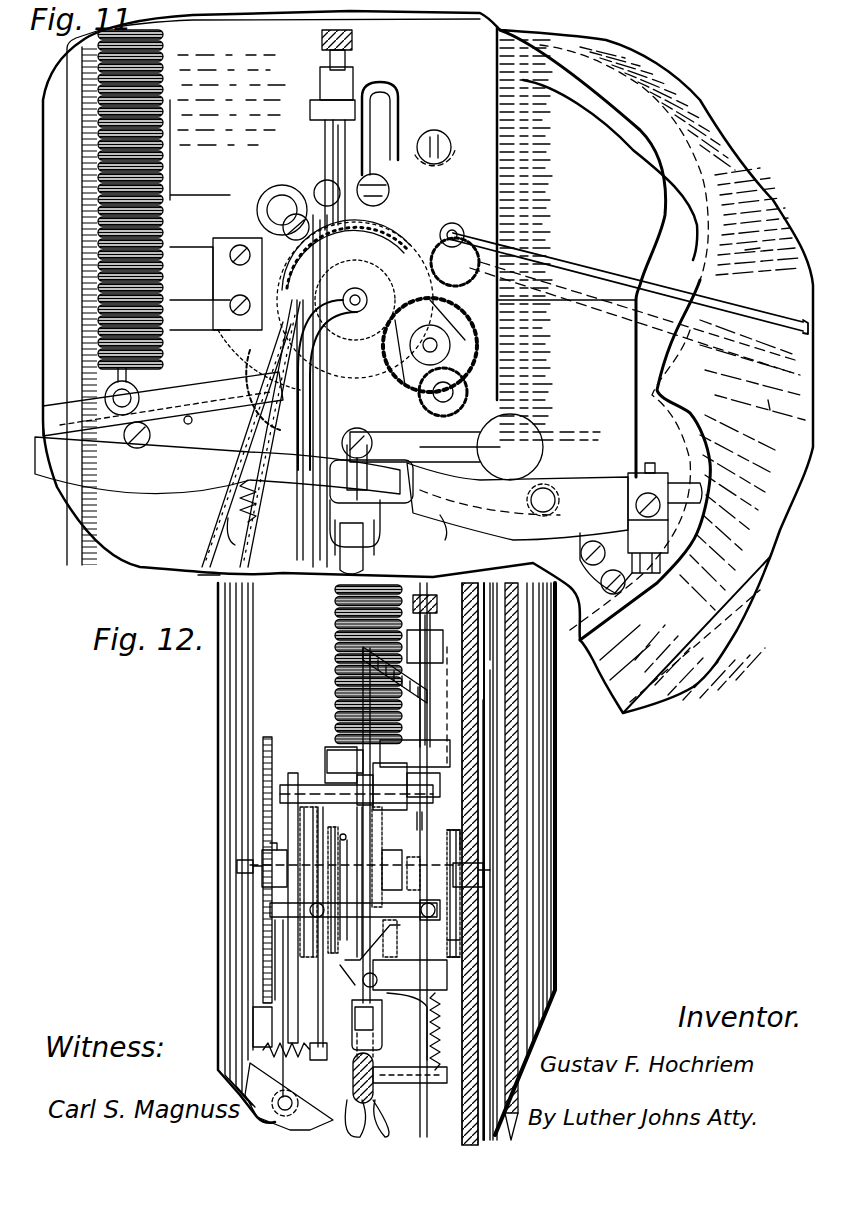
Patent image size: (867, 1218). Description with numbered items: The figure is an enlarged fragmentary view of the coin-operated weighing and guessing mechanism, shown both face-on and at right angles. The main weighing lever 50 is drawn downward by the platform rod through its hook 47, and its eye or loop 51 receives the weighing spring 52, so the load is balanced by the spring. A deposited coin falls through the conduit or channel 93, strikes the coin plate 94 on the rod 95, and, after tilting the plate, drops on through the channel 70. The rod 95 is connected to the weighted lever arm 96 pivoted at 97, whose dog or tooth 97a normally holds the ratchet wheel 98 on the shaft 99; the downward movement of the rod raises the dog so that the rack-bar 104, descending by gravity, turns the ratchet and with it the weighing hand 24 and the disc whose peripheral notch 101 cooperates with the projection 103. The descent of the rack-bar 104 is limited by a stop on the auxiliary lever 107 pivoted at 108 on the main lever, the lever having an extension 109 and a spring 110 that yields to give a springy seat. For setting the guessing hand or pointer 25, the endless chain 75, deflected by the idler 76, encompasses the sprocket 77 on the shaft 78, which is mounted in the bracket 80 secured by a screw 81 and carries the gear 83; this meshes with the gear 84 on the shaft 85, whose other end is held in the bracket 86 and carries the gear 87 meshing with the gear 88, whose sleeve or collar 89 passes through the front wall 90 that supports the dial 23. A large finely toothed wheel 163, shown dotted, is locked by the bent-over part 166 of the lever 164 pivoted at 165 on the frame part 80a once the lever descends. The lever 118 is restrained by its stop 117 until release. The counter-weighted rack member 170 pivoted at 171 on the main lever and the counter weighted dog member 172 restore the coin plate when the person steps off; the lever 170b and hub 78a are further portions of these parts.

In FIG. 11, the weighing spring 52 is at (165, 110).
In FIG. 12, the weighing spring 52 is at (335, 622).
In FIG. 11, the eye or loop 51 is at (140, 398).
In FIG. 11, the rack-bar 104 is at (332, 130).
In FIG. 11, the counter-weighted rack member 170 is at (400, 118).
In FIG. 11, the lever 170b is at (455, 432).
In FIG. 11, the counter weighted dog member 172 is at (446, 135).
In FIG. 11, the dog or tooth 97a is at (360, 186).
In FIG. 11, the weighted lever arm 96 is at (318, 190).
In FIG. 12, the weighted lever arm 96 is at (363, 740).
In FIG. 11, the screw 81 is at (272, 203).
In FIG. 12, the screw 81 is at (280, 793).
In FIG. 11, the bracket 80 is at (284, 232).
In FIG. 12, the bracket 80 is at (292, 773).
In FIG. 11, the pivot 97 is at (462, 230).
In FIG. 12, the pivot 97 is at (380, 790).
In FIG. 11, the sprocket 77 is at (455, 262).
In FIG. 12, the sprocket 77 is at (310, 807).
In FIG. 11, the projection 103 is at (355, 299).
In FIG. 11, the hub lever 78a is at (346, 365).
In FIG. 11, the ratchet wheel 98 is at (455, 340).
In FIG. 12, the ratchet wheel 98 is at (377, 952).
In FIG. 11, the shaft 85 is at (455, 392).
In FIG. 12, the shaft 85 is at (270, 910).
In FIG. 11, the gear 84 is at (457, 394).
In FIG. 12, the gear 84 is at (325, 945).
In FIG. 11, the peripheral notch 101 is at (339, 391).
In FIG. 11, the rod 95 is at (590, 300).
In FIG. 12, the rod 95 is at (395, 821).
In FIG. 11, the coin plate 94 is at (632, 317).
In FIG. 11, the conduit or channel 93 is at (759, 240).
In FIG. 11, the front wall 90 is at (768, 400).
In FIG. 12, the front wall 90 is at (455, 908).
In FIG. 11, the wheel 163 is at (512, 318).
In FIG. 11, the frame part 80a is at (243, 390).
In FIG. 11, the lever 164 is at (163, 413).
In FIG. 11, the pivot 165 is at (217, 458).
In FIG. 11, the main weighing lever 50 is at (150, 482).
In FIG. 12, the main weighing lever 50 is at (382, 1031).
In FIG. 11, the idler 76 is at (270, 433).
In FIG. 12, the idler 76 is at (275, 990).
In FIG. 11, the endless chain 75 is at (205, 555).
In FIG. 12, the endless chain 75 is at (353, 1095).
In FIG. 11, the extension 109 is at (222, 568).
In FIG. 11, the spring 110 is at (238, 504).
In FIG. 11, the pivot 171 is at (446, 447).
In FIG. 11, the bent-over part 166 is at (371, 465).
In FIG. 12, the bent-over part 166 is at (253, 1017).
In FIG. 11, the pivot 108 is at (550, 493).
In FIG. 11, the lever 118 is at (370, 537).
In FIG. 11, the stop 117 is at (342, 552).
In FIG. 11, the auxiliary lever 107 is at (445, 540).
In FIG. 11, the channel 70 is at (647, 640).
In FIG. 12, the gear 83 is at (335, 783).
In FIG. 12, the weighing hand 24 is at (490, 787).
In FIG. 12, the guessing hand or pointer 25 is at (483, 800).
In FIG. 12, the gear 88 is at (460, 840).
In FIG. 12, the shaft 99 is at (568, 852).
In FIG. 12, the sleeve or collar 89 is at (485, 877).
In FIG. 12, the bracket 86 is at (440, 925).
In FIG. 12, the gear 87 is at (458, 950).
In FIG. 12, the dial 23 is at (480, 985).
In FIG. 12, the shaft 78 is at (245, 860).
In FIG. 12, the hook 47 is at (385, 1122).